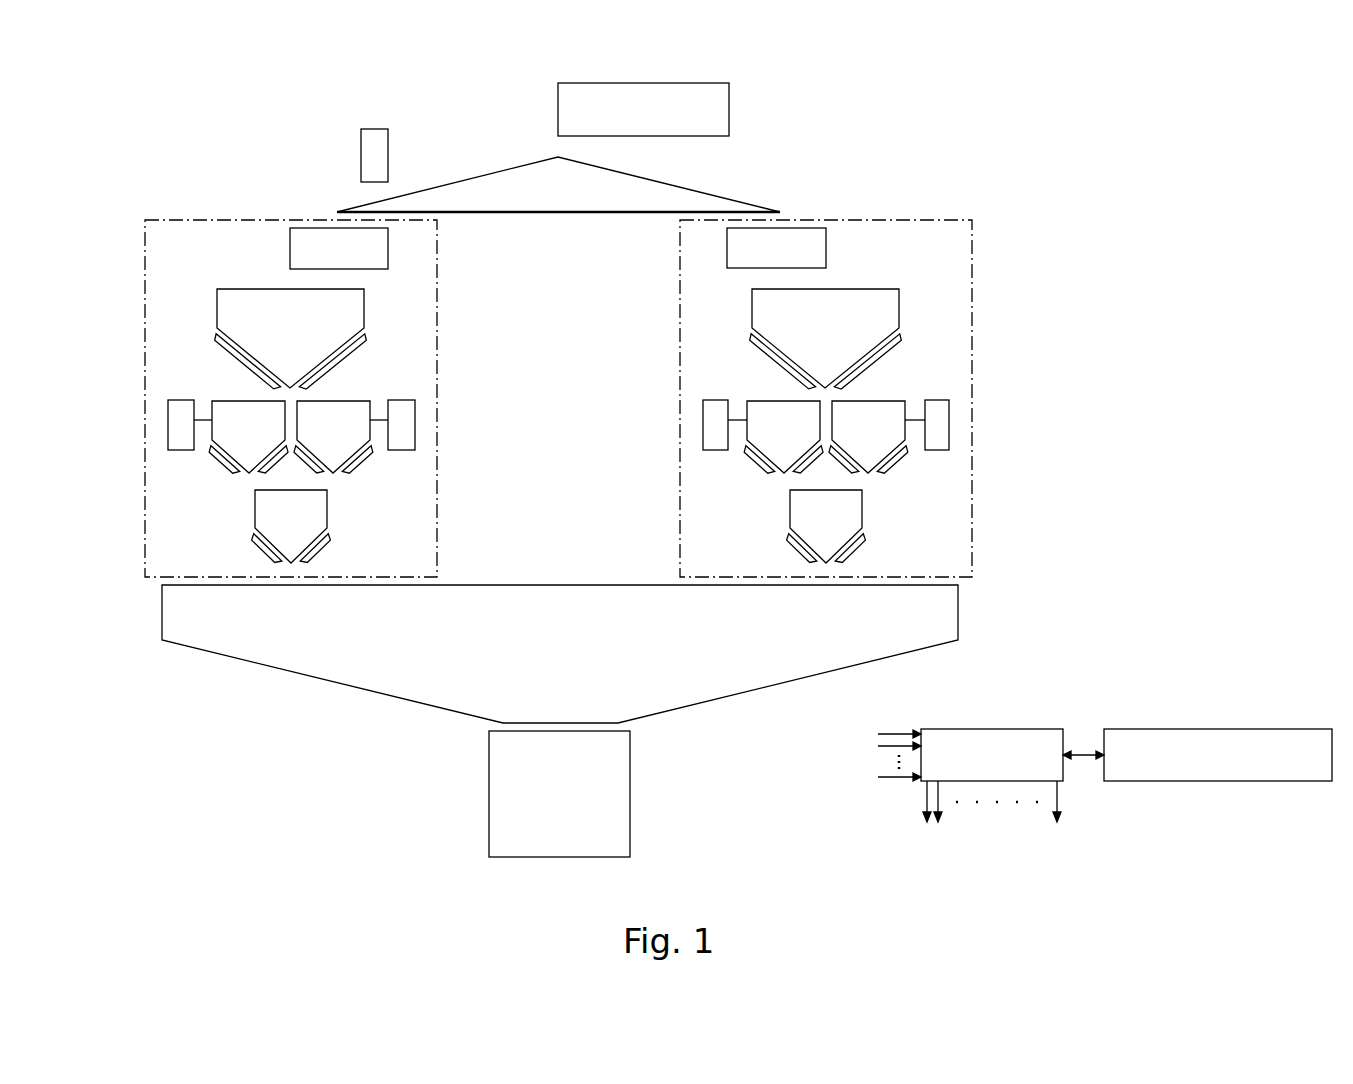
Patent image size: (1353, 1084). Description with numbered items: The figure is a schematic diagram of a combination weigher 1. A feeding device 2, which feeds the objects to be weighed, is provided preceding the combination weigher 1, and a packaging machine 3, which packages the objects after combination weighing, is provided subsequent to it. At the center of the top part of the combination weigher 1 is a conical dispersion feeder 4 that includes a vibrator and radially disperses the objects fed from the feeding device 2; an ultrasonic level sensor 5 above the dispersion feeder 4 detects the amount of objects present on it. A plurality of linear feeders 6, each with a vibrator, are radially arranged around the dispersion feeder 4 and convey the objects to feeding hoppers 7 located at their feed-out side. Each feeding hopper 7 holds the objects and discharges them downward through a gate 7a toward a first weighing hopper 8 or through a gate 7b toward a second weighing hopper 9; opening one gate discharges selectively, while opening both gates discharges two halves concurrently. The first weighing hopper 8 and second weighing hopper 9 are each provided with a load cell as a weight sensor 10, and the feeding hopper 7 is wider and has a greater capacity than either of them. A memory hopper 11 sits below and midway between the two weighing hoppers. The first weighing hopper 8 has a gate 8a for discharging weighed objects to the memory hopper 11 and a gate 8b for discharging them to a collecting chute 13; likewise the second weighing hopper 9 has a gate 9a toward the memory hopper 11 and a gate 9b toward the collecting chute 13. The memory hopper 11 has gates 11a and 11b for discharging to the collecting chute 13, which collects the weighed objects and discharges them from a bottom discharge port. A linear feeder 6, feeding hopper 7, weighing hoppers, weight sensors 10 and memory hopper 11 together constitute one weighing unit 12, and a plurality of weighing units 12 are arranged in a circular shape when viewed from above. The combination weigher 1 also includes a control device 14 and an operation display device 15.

The combination weigher 1 is at (1030, 172).
The feeding device 2 is at (729, 110).
The packaging machine 3 is at (631, 787).
The dispersion feeder 4 is at (713, 197).
The ultrasonic level sensor 5 is at (361, 152).
The linear feeder 6 is at (290, 250).
The feeding hopper 7 is at (217, 305).
The gate 7a is at (232, 352).
The gate 7b is at (350, 352).
The first weighing hopper 8 is at (226, 399).
The gate 8a is at (276, 470).
The gate 8b is at (222, 462).
The second weighing hopper 9 is at (356, 399).
The gate 9a is at (306, 470).
The gate 9b is at (357, 462).
The weight sensor 10 is at (168, 419).
The memory hopper 11 is at (255, 495).
The gate 11a is at (255, 553).
The gate 11b is at (327, 553).
The weighing unit 12 is at (197, 220).
The collecting chute 13 is at (363, 693).
The control device 14 is at (1003, 728).
The operation display device 15 is at (1248, 728).